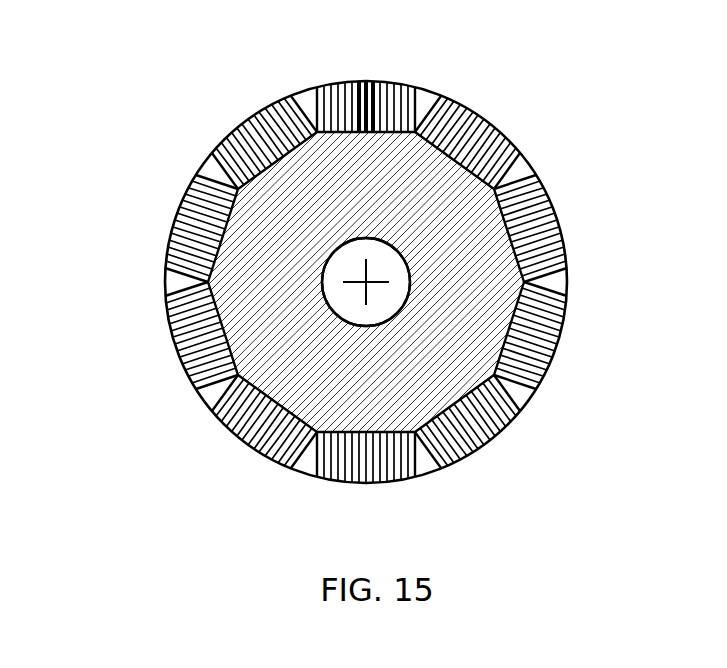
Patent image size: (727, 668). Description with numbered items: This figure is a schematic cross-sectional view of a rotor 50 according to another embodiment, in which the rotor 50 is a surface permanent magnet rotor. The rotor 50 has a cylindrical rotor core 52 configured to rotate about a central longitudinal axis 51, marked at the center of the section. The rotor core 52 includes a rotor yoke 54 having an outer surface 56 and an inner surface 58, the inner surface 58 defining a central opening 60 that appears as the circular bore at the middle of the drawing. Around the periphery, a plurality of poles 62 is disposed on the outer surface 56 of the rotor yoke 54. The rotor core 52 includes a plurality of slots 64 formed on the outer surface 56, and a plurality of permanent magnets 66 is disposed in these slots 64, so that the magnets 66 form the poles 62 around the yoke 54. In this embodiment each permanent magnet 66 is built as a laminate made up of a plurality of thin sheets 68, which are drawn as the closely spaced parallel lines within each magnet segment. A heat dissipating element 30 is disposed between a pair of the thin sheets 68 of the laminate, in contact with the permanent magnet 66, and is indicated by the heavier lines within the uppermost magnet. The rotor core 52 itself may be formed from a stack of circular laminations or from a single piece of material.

The rotor 50 is at (150, 90).
The central longitudinal axis 51 is at (345, 287).
The rotor core 52 is at (278, 95).
The heat dissipating element 30 is at (365, 81).
The rotor yoke 54 is at (390, 145).
The outer surface 56 is at (467, 158).
The inner surface 58 is at (398, 268).
The central opening 60 is at (350, 262).
The poles 62 is at (518, 416).
The slots 64 is at (418, 465).
The permanent magnets 66 is at (250, 432).
The thin sheets 68 is at (373, 483).